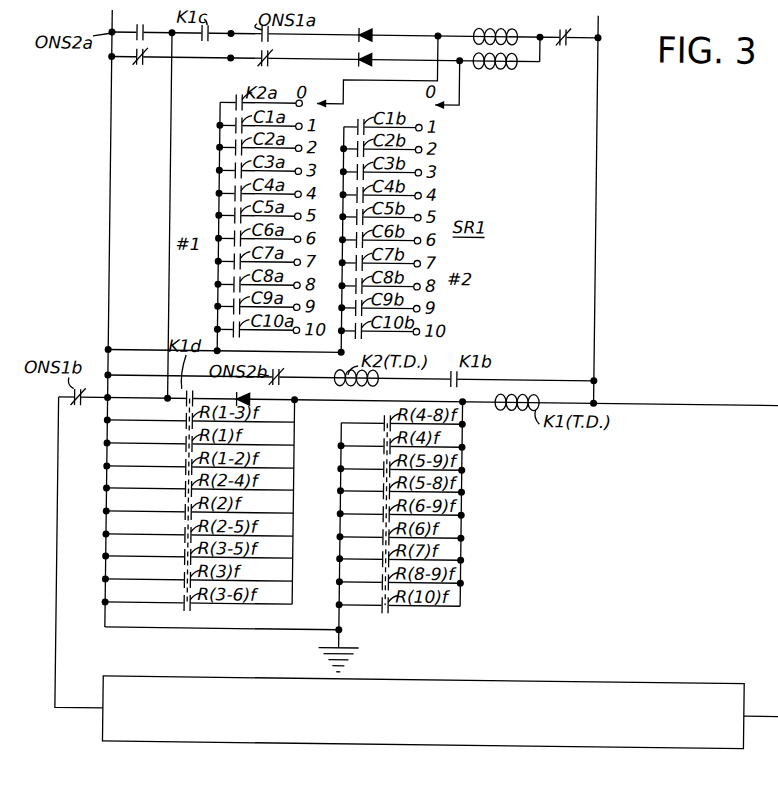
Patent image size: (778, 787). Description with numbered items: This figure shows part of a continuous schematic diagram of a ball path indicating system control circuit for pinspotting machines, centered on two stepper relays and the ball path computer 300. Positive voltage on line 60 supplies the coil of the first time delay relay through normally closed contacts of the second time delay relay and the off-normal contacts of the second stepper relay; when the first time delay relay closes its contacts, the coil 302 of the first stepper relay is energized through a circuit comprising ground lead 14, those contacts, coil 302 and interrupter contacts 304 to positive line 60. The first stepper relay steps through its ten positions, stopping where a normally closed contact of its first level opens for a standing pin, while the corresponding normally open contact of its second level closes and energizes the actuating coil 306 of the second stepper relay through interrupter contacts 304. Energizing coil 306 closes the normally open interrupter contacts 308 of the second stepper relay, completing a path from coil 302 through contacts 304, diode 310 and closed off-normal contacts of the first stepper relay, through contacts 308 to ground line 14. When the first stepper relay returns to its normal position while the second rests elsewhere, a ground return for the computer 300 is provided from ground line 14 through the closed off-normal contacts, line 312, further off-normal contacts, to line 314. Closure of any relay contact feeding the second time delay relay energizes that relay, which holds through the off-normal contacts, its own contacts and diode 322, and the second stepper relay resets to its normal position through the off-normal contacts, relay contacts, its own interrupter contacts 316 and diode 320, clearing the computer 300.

The ground lead 14 is at (111, 140).
The positive line 60 is at (598, 166).
The ball path computer 300 is at (582, 681).
The coil of stepper relay SR1 302 is at (514, 27).
The interrupter contacts 304 is at (560, 42).
The actuating coil of stepper relay SR2 306 is at (491, 64).
The interrupter contacts 308 is at (141, 66).
The diode 310 is at (364, 30).
The line 312 is at (171, 157).
The line 314 is at (63, 490).
The interrupter contacts 316 is at (286, 54).
The diode 320 is at (364, 54).
The diode 322 is at (238, 396).